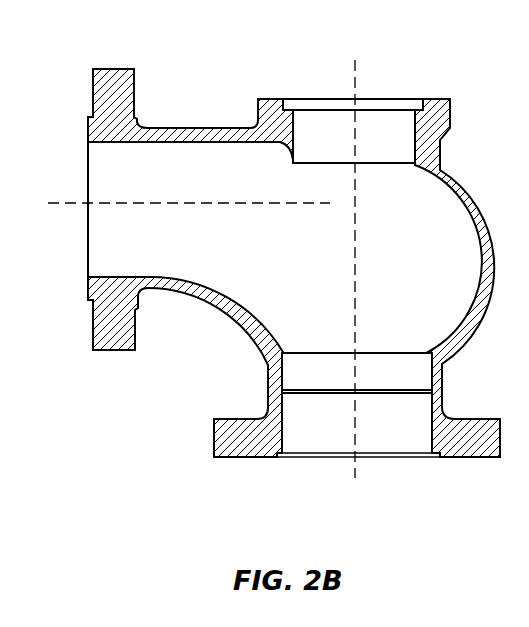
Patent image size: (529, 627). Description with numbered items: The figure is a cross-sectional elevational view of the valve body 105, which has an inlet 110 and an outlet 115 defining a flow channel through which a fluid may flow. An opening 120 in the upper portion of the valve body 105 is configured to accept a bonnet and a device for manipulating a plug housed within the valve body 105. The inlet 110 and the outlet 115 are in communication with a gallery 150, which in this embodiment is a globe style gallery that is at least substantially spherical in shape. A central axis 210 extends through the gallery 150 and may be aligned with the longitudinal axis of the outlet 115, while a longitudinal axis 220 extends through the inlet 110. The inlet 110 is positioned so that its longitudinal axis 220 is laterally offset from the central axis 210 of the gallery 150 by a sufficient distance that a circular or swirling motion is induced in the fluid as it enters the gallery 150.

The valve body 105 is at (447, 99).
The inlet 110 is at (106, 234).
The outlet 115 is at (335, 426).
The opening 120 is at (294, 142).
The gallery 150 is at (430, 273).
The central axis 210 is at (357, 77).
The longitudinal axis 220 is at (67, 203).